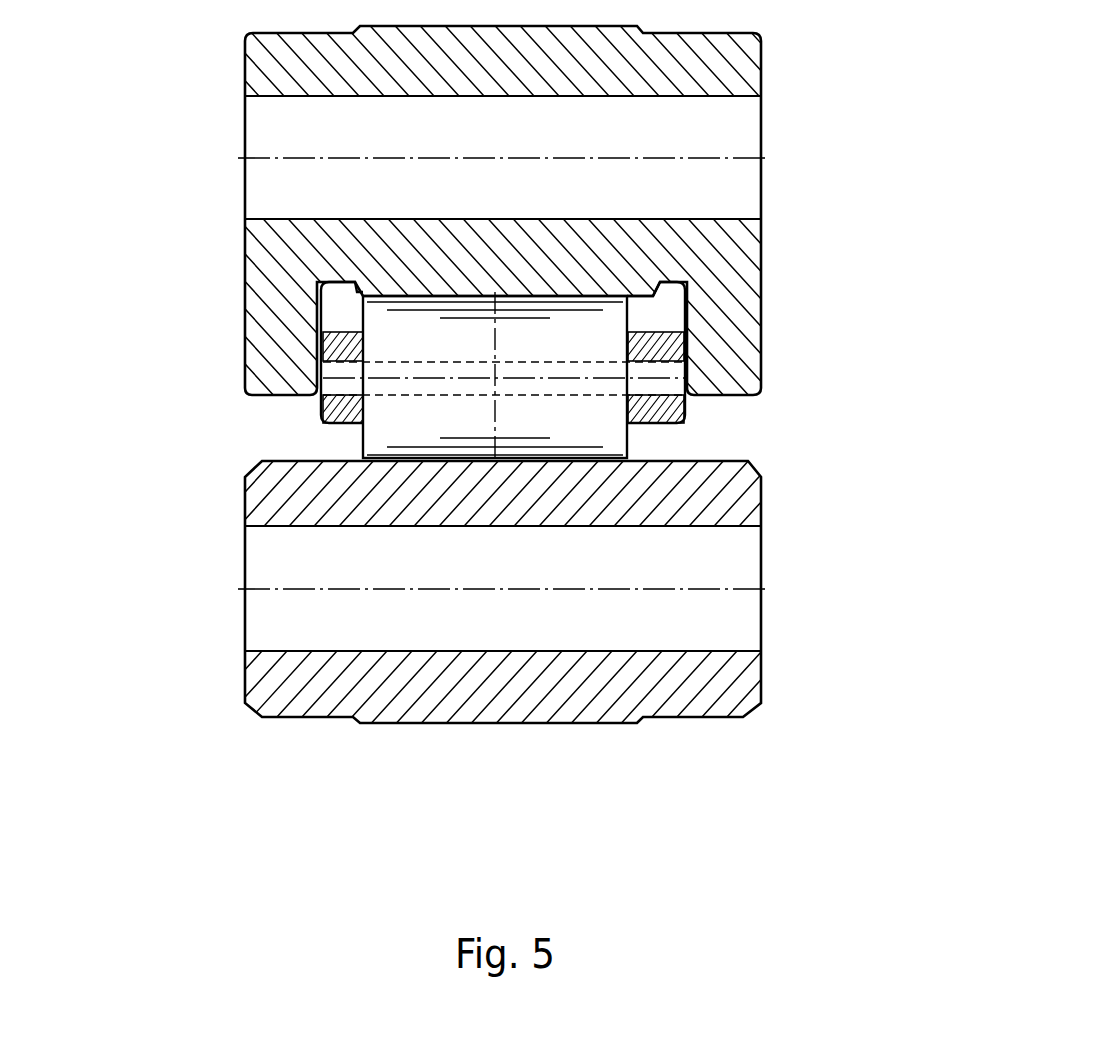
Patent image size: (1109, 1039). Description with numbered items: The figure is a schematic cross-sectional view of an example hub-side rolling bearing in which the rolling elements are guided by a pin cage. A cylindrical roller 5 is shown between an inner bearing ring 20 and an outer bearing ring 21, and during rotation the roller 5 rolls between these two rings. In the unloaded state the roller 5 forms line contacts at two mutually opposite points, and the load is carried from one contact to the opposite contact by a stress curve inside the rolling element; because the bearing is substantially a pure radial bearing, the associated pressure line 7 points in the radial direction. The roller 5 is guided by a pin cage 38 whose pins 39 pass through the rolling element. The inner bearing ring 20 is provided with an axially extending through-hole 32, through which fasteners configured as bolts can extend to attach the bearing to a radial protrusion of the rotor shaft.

The outer bearing ring 21 is at (255, 290).
The inner bearing ring 20 is at (270, 681).
The axially extending through-hole 32 is at (270, 615).
The cylindrical roller 5 is at (540, 414).
The pressure line 7 is at (495, 345).
The pin 39 is at (665, 369).
The pin cage 38 is at (698, 418).